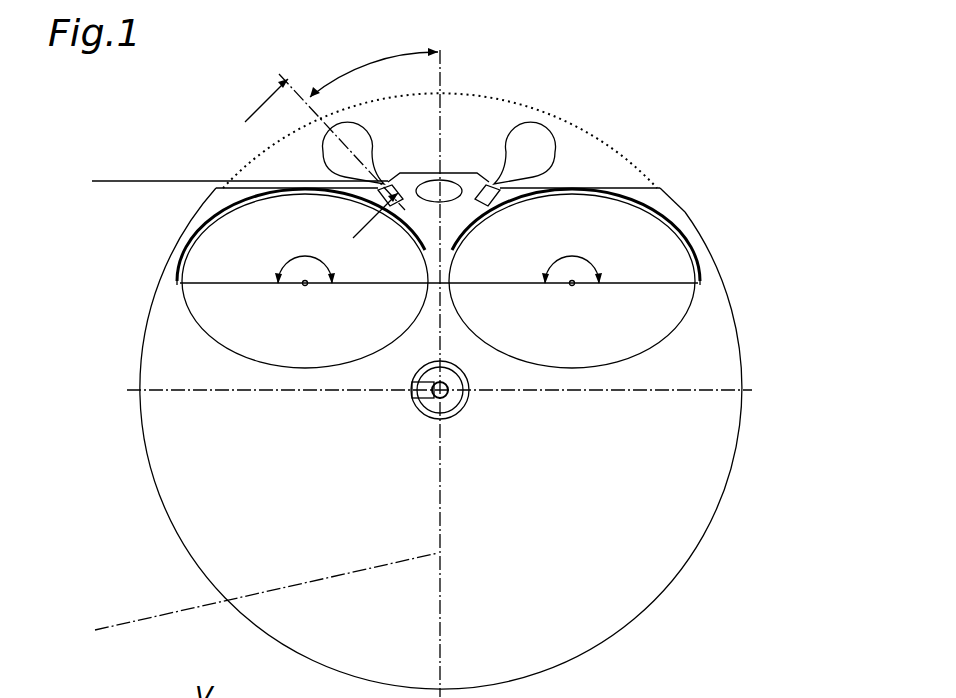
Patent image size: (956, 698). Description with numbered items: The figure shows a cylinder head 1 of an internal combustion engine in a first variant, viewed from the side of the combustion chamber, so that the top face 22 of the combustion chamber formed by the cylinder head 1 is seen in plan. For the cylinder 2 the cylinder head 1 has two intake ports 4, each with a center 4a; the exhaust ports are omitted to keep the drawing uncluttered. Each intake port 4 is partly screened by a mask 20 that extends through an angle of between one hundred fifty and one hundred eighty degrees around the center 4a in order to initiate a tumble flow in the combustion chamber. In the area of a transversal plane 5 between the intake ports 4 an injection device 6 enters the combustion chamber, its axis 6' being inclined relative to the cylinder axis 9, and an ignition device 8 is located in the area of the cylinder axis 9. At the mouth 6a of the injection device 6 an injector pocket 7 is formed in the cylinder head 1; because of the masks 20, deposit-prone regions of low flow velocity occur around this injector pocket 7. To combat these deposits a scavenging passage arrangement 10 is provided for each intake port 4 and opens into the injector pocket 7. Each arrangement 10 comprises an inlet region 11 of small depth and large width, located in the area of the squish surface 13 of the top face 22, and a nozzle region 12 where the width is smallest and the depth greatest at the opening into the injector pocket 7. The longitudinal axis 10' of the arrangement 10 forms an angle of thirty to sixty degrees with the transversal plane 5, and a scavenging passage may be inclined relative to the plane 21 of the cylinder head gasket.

The cylinder head 1 is at (150, 277).
The cylinder 2 is at (683, 210).
The intake ports 4 is at (403, 333).
The center of the intake port 4a is at (572, 283).
The transversal plane 5 is at (253, 597).
The injection device 6 is at (499, 99).
The axis of the injection device 6' is at (469, 106).
The mouth of the injection device 6a is at (225, 179).
The injector pocket 7 is at (480, 203).
The ignition device 8 is at (466, 398).
The cylinder axis 9 is at (470, 403).
The scavenging passage arrangement 10 is at (441, 130).
The longitudinal axis of the scavenging passage arrangement 10' is at (232, 142).
The inlet region 11 is at (363, 123).
The nozzle region 12 is at (380, 184).
The squish surface 13 is at (600, 178).
The mask 20 is at (693, 250).
The plane of the cylinder head gasket 21 is at (148, 513).
The top face of the combustion chamber 22 is at (175, 322).